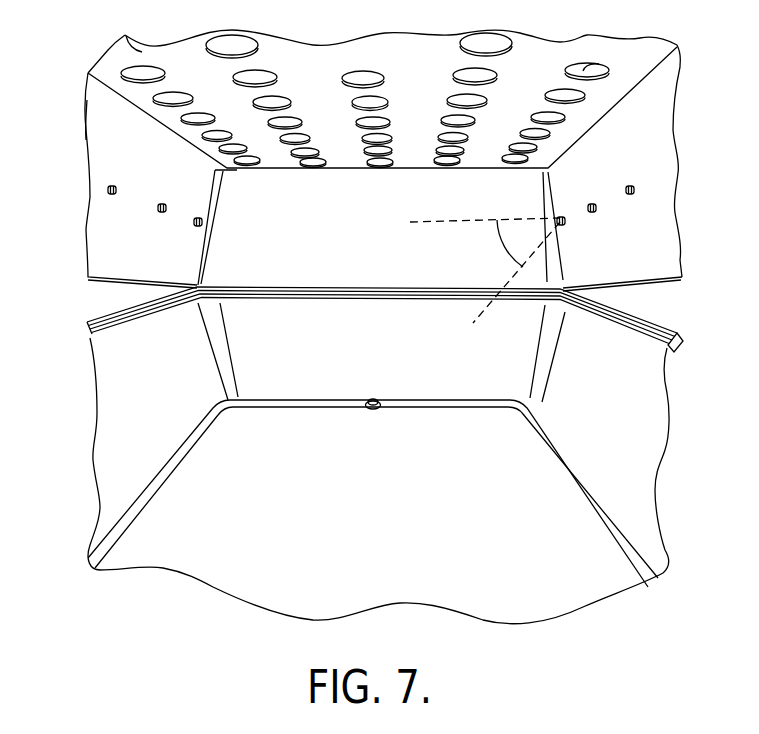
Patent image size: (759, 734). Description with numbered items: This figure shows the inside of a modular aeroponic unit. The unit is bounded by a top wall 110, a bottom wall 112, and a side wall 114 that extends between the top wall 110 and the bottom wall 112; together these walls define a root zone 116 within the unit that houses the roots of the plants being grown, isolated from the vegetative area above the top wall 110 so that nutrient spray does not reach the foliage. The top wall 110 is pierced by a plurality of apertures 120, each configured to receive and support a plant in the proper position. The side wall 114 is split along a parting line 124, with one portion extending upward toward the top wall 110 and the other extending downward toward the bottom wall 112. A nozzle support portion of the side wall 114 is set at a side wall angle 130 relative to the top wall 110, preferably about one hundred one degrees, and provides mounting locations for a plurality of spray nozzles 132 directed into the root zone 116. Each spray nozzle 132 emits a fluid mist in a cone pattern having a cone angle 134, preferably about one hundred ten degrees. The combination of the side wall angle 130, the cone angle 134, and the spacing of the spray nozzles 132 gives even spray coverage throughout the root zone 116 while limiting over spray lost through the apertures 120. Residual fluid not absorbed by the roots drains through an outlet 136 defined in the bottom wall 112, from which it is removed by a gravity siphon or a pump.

The top wall 110 is at (92, 72).
The side wall 114 is at (100, 132).
The apertures 120 is at (606, 70).
The side wall angle 130 is at (236, 172).
The spray nozzles 132 is at (198, 228).
The cone angle 134 is at (503, 256).
The parting line 124 is at (677, 333).
The bottom wall 112 is at (187, 562).
The root zone 116 is at (190, 480).
The outlet 136 is at (372, 400).